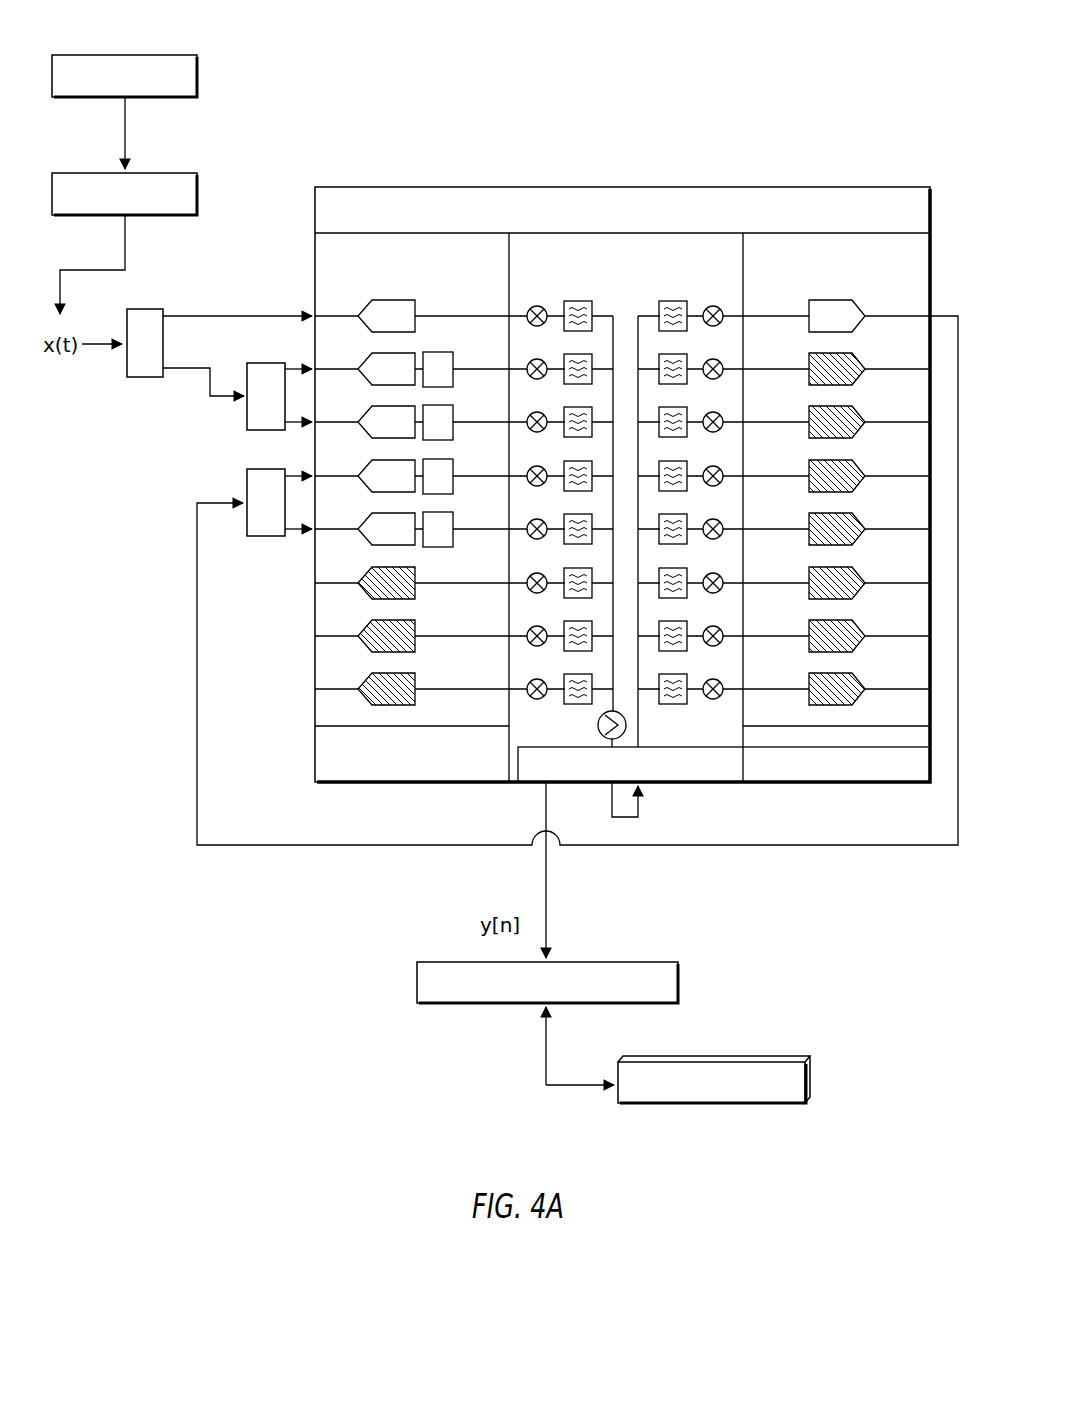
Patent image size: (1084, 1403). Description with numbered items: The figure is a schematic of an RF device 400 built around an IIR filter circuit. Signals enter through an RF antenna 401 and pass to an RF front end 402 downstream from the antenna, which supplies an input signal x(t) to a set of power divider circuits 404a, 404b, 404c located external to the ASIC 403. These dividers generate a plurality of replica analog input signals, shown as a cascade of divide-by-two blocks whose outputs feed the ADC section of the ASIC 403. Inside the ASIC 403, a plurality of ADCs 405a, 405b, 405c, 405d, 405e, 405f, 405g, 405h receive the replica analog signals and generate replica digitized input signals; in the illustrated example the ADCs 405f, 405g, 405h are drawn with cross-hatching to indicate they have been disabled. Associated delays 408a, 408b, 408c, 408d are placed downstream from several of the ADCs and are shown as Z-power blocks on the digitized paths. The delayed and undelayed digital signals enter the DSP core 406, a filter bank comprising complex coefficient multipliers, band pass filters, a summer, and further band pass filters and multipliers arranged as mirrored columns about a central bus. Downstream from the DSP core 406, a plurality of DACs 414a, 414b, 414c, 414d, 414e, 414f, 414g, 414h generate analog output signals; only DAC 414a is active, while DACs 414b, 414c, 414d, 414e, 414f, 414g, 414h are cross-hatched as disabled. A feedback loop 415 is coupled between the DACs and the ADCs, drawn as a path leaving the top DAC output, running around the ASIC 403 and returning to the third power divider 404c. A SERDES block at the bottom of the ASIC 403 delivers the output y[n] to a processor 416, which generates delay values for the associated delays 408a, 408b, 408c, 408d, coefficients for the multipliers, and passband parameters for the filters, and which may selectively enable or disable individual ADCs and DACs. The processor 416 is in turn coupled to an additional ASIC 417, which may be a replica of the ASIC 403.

The RF device 400 is at (713, 73).
The RF antenna 401 is at (110, 55).
The RF front end 402 is at (110, 173).
The ASIC 403 is at (856, 170).
The power divider circuit 404a is at (143, 377).
The power divider circuit 404b is at (245, 413).
The power divider circuit 404c is at (260, 536).
The ADC 405a is at (388, 300).
The ADC 405b is at (388, 353).
The ADC 405c is at (388, 406).
The ADC 405d is at (388, 460).
The ADC 405e is at (388, 513).
The ADC 405f is at (388, 567).
The ADC 405g is at (388, 620).
The ADC 405h is at (388, 673).
The DSP core 406 is at (682, 256).
The associated delay 408a is at (455, 360).
The associated delay 408b is at (455, 413).
The associated delay 408c is at (455, 467).
The associated delay 408d is at (455, 520).
The DAC 414a is at (806, 314).
The DAC 414b is at (806, 367).
The DAC 414c is at (806, 420).
The DAC 414d is at (806, 474).
The DAC 414e is at (806, 527).
The DAC 414f is at (806, 581).
The DAC 414g is at (806, 634).
The DAC 414h is at (806, 687).
The feedback loop 415 is at (797, 845).
The processor 416 is at (415, 985).
The additional ASIC 417 is at (765, 1062).